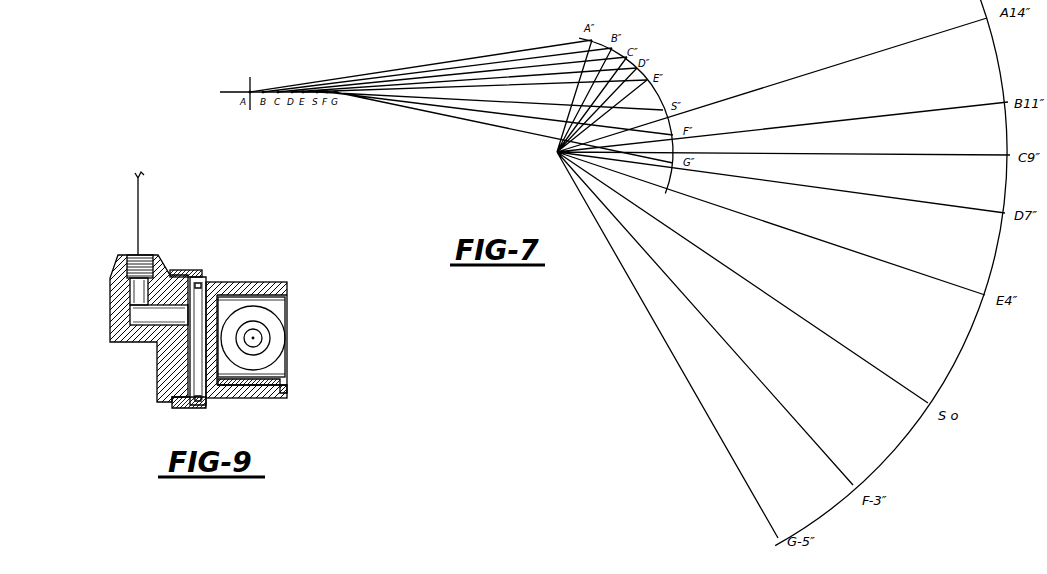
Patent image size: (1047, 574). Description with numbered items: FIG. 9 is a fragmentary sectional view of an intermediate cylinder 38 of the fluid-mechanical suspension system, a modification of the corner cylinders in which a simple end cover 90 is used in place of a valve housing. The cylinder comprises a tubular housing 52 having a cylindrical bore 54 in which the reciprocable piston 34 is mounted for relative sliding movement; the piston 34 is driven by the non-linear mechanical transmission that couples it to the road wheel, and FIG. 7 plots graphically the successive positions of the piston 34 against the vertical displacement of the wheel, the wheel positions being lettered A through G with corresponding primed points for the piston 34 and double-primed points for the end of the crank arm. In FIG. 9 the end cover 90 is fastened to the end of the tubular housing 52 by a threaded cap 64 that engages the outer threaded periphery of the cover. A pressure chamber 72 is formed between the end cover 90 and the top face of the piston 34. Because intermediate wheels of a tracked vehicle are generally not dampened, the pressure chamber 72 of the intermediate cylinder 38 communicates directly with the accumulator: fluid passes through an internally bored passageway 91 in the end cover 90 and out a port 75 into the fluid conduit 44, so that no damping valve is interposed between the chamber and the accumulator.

The piston 34 is at (283, 393).
The intermediate cylinder 38 is at (286, 274).
The fluid conduit 44 is at (140, 222).
The tubular housing 52 is at (289, 284).
The cylindrical bore 54 is at (288, 296).
The threaded cap 64 is at (200, 278).
The pressure chamber 72 is at (213, 395).
The port 75 is at (141, 254).
The end cover 90 is at (112, 276).
The internally bored passageway 91 is at (166, 316).